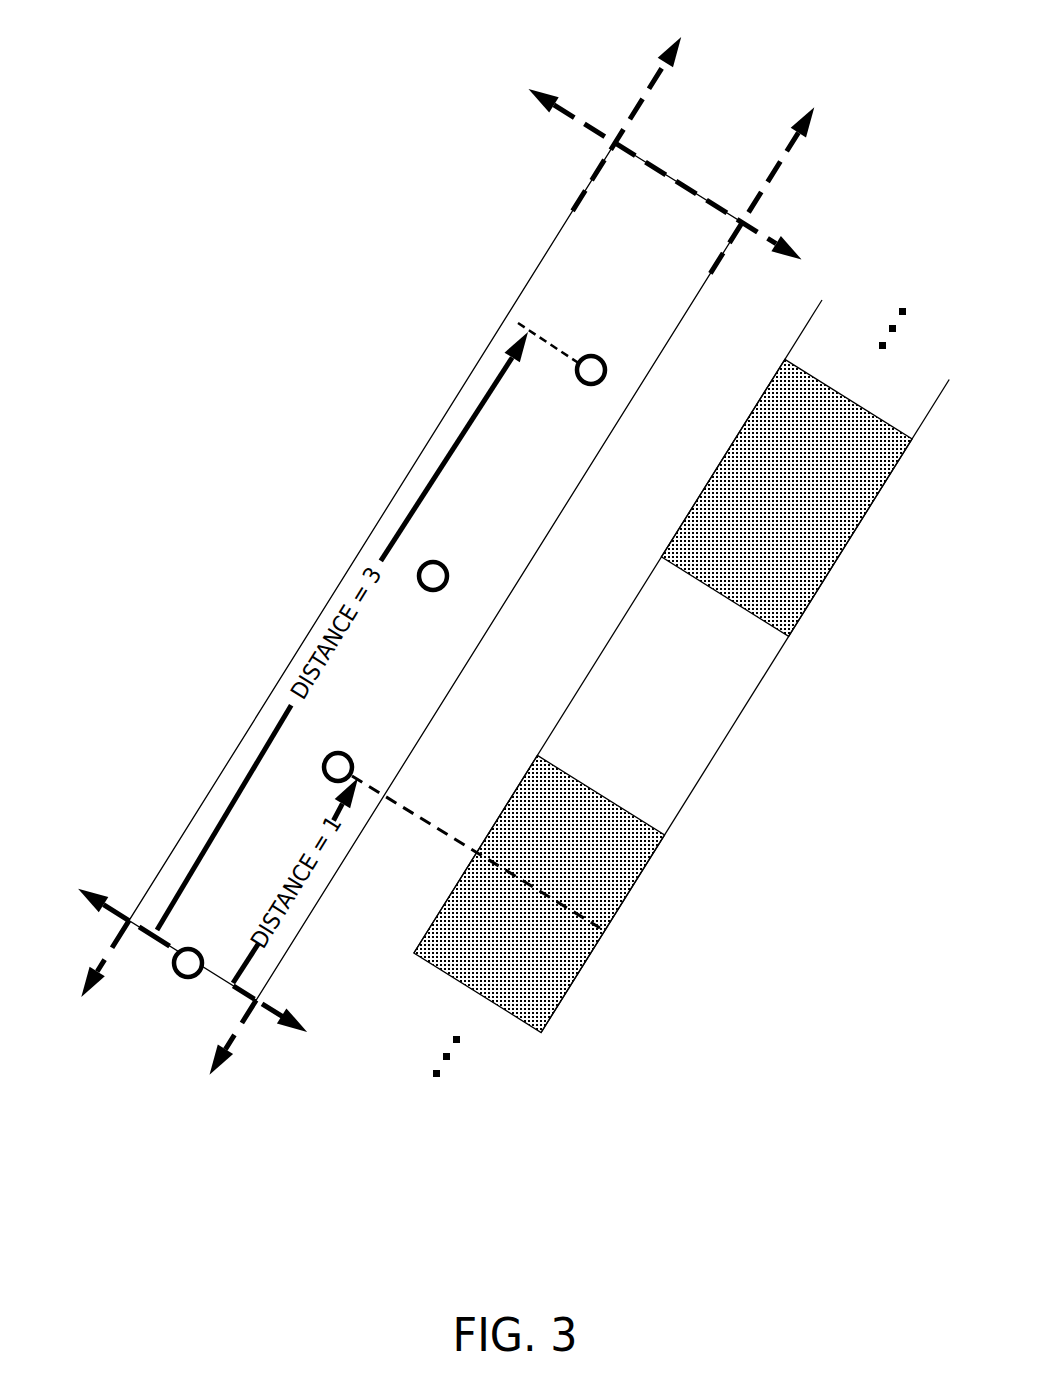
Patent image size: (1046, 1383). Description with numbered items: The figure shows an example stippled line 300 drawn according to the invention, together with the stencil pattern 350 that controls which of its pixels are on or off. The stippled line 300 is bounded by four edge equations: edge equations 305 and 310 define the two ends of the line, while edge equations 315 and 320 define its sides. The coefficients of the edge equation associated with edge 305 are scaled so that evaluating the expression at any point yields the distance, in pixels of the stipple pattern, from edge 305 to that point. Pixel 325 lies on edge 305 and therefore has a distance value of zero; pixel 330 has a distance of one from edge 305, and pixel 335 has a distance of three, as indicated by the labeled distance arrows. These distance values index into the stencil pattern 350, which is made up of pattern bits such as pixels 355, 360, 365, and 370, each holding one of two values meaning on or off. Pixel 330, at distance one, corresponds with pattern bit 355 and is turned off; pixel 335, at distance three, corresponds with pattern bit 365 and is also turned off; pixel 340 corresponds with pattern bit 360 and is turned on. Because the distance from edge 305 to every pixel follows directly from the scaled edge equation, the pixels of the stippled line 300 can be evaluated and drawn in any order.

The stippled line 300 is at (277, 677).
The edge equation 305 is at (204, 982).
The edge equation 310 is at (641, 160).
The edge equation 315 is at (772, 166).
The edge equation 320 is at (645, 110).
The pixel 325 is at (175, 967).
The pixel 330 is at (323, 768).
The pixel 335 is at (586, 367).
The pixel 340 is at (430, 572).
The stencil pattern 350 is at (668, 834).
The pattern bit 355 is at (539, 893).
The pattern bit 360 is at (665, 690).
The pattern bit 365 is at (786, 497).
The pattern bit 370 is at (920, 392).